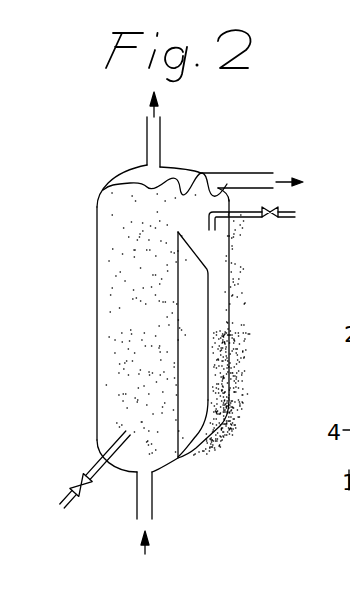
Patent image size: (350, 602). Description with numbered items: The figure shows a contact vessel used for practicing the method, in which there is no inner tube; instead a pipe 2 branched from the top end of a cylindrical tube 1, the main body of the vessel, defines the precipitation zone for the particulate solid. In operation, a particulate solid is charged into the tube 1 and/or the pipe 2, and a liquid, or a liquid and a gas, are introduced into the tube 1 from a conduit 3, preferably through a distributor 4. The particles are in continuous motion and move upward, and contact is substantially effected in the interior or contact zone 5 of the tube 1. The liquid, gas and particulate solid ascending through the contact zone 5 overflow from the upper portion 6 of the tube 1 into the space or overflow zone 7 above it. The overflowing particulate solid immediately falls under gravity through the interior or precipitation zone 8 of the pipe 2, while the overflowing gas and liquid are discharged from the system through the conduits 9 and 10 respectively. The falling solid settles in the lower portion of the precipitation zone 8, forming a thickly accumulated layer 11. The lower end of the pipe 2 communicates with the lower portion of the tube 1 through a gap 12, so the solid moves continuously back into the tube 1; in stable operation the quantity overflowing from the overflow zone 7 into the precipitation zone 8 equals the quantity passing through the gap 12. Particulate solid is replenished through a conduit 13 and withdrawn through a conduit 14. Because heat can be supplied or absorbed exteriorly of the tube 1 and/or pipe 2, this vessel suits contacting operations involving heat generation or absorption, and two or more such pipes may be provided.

The cylindrical tube 1 is at (97, 352).
The pipe 2 is at (232, 310).
The conduit 3 is at (153, 503).
The distributor 4 is at (142, 473).
The contact zone 5 is at (124, 292).
The upper portion of the tube 6 is at (115, 222).
The overflow zone 7 is at (176, 201).
The precipitation zone 8 is at (209, 259).
The conduit 9 is at (161, 130).
The conduit 10 is at (258, 173).
The thickly accumulated layer 11 is at (232, 360).
The gap 12 is at (186, 462).
The conduit 13 is at (283, 212).
The conduit 14 is at (65, 491).